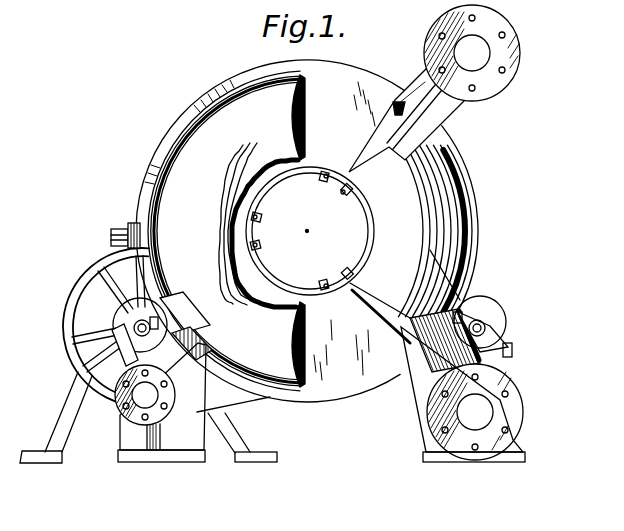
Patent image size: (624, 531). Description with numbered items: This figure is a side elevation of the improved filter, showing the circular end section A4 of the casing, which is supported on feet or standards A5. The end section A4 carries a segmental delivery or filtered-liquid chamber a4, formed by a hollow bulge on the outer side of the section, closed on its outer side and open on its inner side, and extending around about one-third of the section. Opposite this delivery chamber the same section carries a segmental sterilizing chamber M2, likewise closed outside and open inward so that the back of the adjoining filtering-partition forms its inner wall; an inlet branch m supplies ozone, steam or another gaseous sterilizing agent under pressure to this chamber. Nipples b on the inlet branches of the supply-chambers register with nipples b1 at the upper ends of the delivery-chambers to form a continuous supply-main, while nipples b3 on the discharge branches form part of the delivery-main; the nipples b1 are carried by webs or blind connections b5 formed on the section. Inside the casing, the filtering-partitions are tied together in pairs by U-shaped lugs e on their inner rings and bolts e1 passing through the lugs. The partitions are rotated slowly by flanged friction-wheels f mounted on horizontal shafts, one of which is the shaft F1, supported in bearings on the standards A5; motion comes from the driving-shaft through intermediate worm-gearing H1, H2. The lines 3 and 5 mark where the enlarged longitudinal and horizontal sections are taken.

The sterilizing chamber M2 is at (307, 231).
The U-shaped lugs e is at (296, 225).
The bolts e1 is at (342, 189).
The delivery chamber a4 is at (434, 231).
The section line 5 5 is at (490, 231).
The section line 3 3 is at (307, 231).
The webs or blind connections b5 is at (445, 115).
The nipples b1 is at (492, 88).
The nipples b is at (418, 322).
The nipples b3 is at (510, 397).
The horizontal shaft F1 is at (140, 328).
The flanged friction-wheels f is at (139, 300).
The worm-gearing H2 is at (76, 338).
The worm-gearing H1 is at (131, 223).
The inlet branch m is at (190, 347).
The feet or standards A5 is at (165, 410).
The end section A4 is at (179, 397).